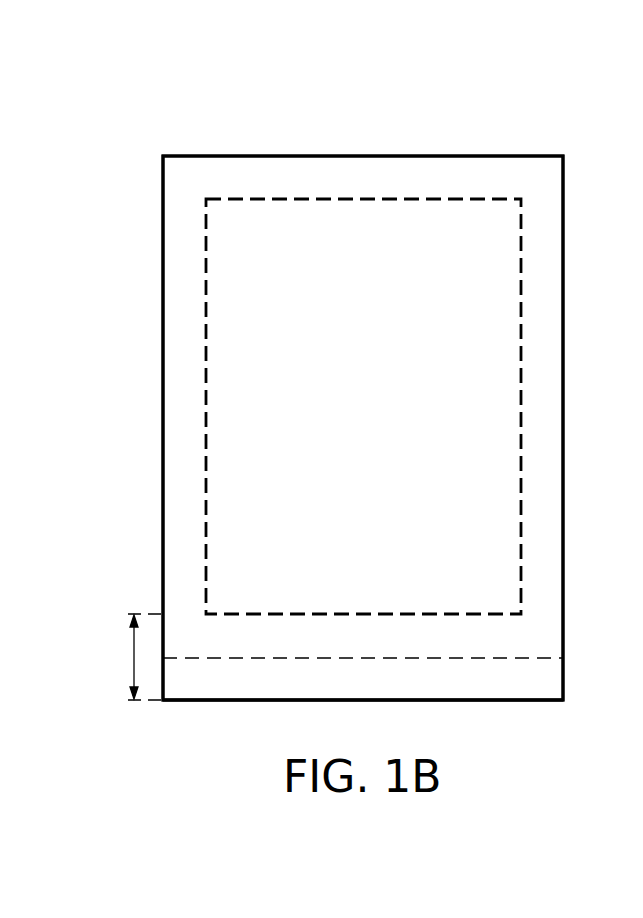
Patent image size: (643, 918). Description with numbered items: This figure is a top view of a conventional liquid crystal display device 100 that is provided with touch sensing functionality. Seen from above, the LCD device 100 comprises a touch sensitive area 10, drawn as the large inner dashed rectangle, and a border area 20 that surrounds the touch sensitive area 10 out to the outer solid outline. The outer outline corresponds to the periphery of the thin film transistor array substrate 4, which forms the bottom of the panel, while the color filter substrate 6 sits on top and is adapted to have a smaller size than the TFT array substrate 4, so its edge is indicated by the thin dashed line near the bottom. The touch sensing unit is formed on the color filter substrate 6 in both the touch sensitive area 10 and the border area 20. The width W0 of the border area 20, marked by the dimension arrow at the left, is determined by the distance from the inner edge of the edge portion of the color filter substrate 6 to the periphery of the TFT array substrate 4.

The liquid crystal display device 100 is at (537, 98).
The border area 20 is at (306, 165).
The touch sensitive area 10 is at (416, 207).
The color filter substrate 6 is at (535, 659).
The thin film transistor array substrate 4 is at (535, 701).
The width of the border area W0 is at (125, 657).